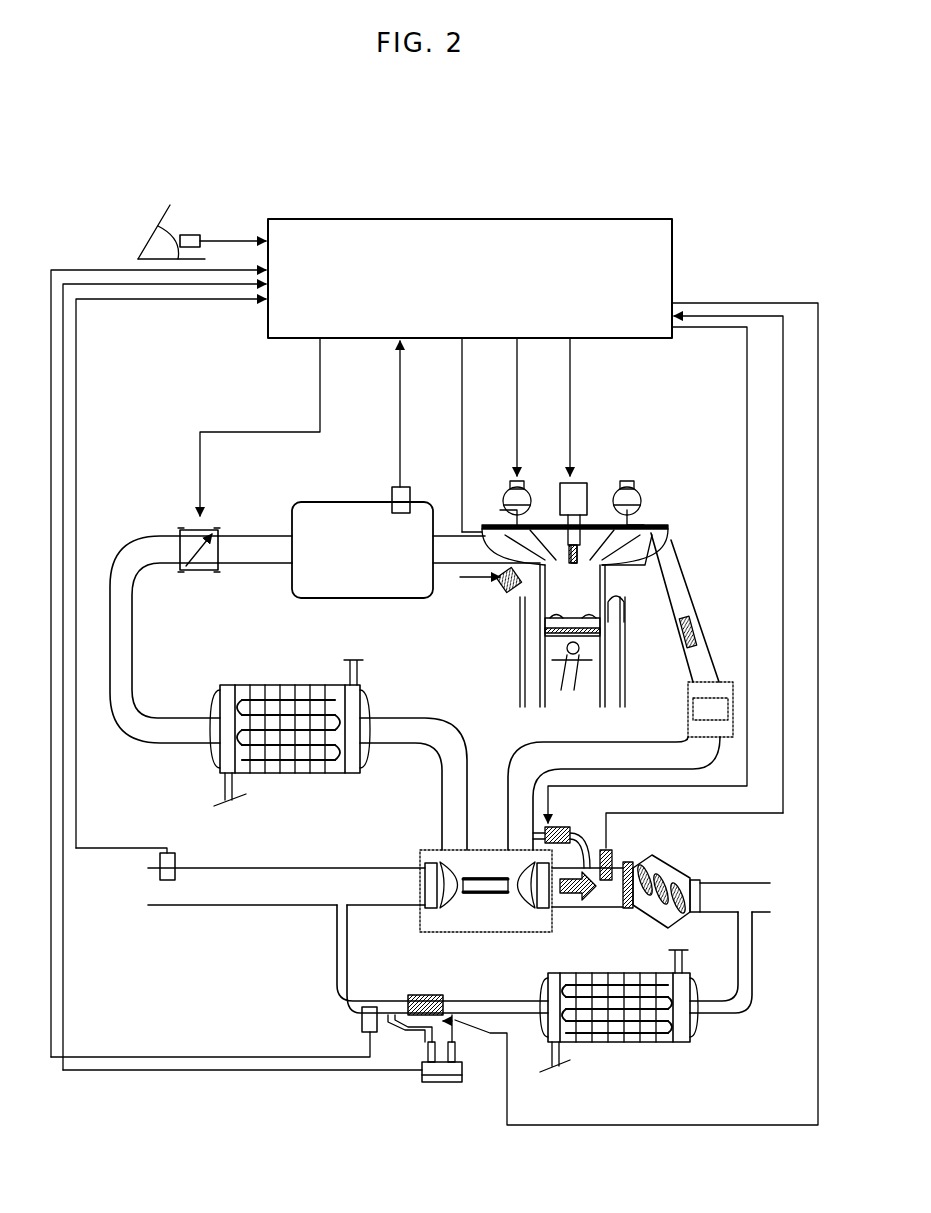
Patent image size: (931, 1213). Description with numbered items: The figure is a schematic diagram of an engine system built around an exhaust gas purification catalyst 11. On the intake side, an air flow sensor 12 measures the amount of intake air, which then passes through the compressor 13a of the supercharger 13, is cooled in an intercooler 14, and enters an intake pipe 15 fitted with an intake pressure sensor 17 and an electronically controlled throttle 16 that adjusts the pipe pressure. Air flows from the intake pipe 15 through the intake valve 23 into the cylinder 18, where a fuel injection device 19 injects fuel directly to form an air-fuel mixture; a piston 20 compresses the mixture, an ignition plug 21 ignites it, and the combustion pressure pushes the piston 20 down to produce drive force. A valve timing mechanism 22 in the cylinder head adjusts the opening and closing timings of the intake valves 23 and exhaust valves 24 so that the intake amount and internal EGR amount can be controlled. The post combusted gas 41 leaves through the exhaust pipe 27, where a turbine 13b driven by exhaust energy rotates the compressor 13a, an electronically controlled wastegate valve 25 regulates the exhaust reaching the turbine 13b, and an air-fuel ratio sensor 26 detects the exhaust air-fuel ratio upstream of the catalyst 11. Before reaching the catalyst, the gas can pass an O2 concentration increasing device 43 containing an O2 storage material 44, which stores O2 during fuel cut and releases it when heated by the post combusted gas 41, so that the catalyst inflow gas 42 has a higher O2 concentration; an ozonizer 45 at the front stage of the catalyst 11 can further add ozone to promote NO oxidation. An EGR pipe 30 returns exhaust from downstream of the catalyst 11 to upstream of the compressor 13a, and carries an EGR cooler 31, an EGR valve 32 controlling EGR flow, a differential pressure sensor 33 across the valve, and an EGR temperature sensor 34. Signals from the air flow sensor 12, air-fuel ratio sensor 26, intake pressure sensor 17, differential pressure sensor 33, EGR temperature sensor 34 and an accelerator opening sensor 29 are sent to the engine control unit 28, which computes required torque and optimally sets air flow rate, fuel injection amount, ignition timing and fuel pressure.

The exhaust gas purification catalyst 11 is at (702, 872).
The air flow sensor 12 is at (180, 862).
The supercharger 13 is at (478, 887).
The compressor 13a is at (432, 920).
The turbine 13b is at (542, 920).
The intercooler 14 is at (292, 688).
The intake pipe 15 is at (384, 575).
The electronically controlled throttle 16 is at (198, 556).
The intake pressure sensor 17 is at (392, 494).
The cylinder 18 is at (618, 612).
The fuel injection device 19 is at (505, 586).
The piston 20 is at (548, 668).
The ignition plug 21 is at (586, 496).
The valve timing mechanism 22 is at (522, 488).
The intake valve 23 is at (486, 520).
The exhaust valve 24 is at (655, 490).
The electronically controlled wastegate valve 25 is at (560, 828).
The air-fuel ratio sensor 26 is at (616, 852).
The exhaust pipe 27 is at (680, 586).
The engine control unit 28 is at (466, 226).
The accelerator opening sensor 29 is at (198, 235).
The EGR pipe 30 is at (336, 970).
The EGR cooler 31 is at (648, 1052).
The EGR valve 32 is at (452, 990).
The differential pressure sensor 33 is at (426, 1080).
The EGR temperature sensor 34 is at (355, 1026).
The post combusted gas 41 is at (702, 625).
The catalyst inflow gas 42 is at (527, 830).
The O2 concentration increasing device 43 is at (736, 692).
The O2 storage material 44 is at (730, 706).
The ozonizer 45 is at (680, 948).